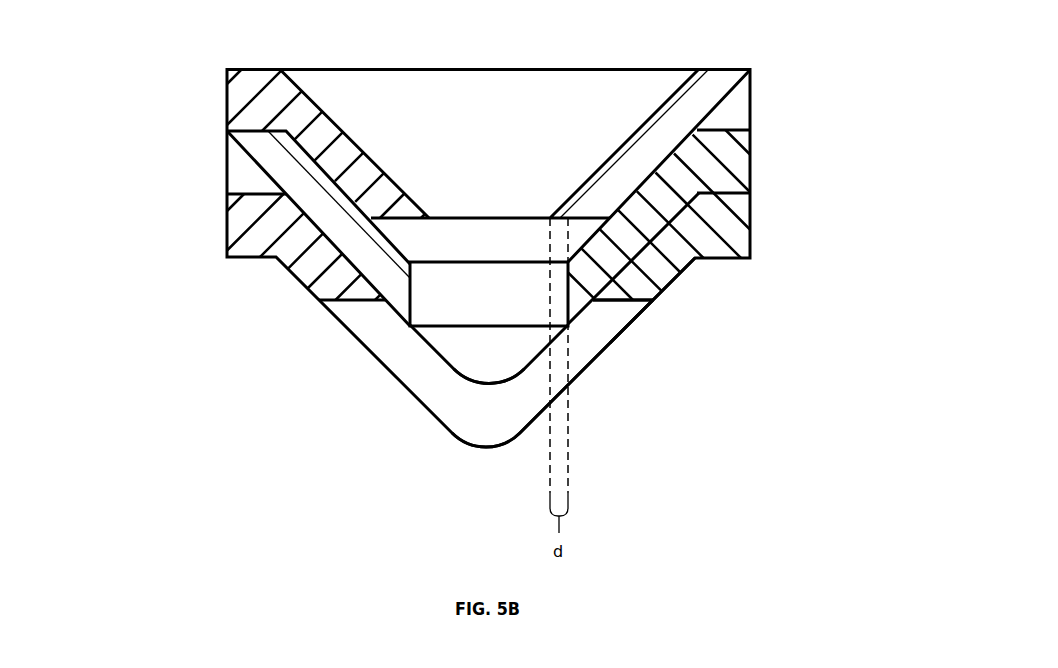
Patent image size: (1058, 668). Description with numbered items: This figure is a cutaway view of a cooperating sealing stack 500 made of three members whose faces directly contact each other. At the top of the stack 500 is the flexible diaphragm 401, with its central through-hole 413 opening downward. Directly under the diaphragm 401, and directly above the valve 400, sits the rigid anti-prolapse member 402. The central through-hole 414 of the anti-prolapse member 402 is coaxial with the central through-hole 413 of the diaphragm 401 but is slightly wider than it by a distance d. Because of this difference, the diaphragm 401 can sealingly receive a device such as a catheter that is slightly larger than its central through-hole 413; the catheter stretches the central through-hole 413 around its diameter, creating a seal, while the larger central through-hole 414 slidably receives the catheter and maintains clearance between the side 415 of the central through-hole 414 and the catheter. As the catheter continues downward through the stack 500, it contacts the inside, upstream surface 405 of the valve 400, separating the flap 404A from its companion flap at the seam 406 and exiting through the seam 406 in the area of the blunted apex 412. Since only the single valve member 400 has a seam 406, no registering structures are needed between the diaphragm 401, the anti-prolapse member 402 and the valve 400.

The valve 400 is at (227, 235).
The diaphragm 401 is at (227, 105).
The rigid anti-prolapse member 402 is at (227, 171).
The flap 404A is at (600, 360).
The inside (upstream) surface 405 is at (493, 363).
The seam 406 is at (625, 320).
The blunted apex 412 is at (480, 448).
The central through-hole of the diaphragm 413 is at (428, 216).
The central through-hole of the anti-prolapse member 414 is at (452, 328).
The side of the central through-hole 415 is at (512, 304).
The stack 500 is at (888, 60).